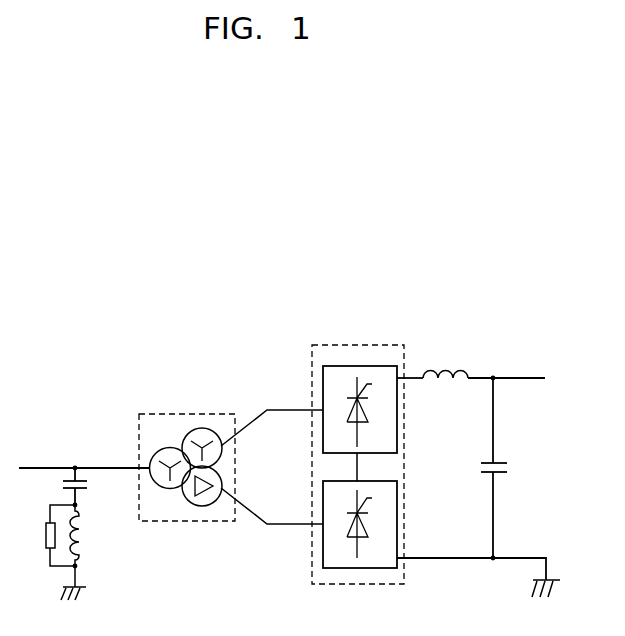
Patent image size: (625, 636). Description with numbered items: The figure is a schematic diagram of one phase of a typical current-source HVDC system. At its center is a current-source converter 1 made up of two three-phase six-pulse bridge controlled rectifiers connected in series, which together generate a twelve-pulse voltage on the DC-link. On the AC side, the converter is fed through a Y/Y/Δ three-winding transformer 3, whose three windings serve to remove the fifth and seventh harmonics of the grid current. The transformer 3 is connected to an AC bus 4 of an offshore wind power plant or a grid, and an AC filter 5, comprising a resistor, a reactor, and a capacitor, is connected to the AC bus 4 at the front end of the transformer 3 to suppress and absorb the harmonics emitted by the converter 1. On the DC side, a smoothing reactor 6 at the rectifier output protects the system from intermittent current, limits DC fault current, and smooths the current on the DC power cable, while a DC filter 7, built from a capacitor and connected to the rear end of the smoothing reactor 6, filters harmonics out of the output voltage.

The current-source converter 1 is at (385, 433).
The Y/Y/Δ three-winding transformer 3 is at (175, 413).
The AC bus 4 is at (33, 462).
The AC filter 5 is at (92, 535).
The smoothing reactor 6 is at (455, 362).
The DC filter 7 is at (512, 458).